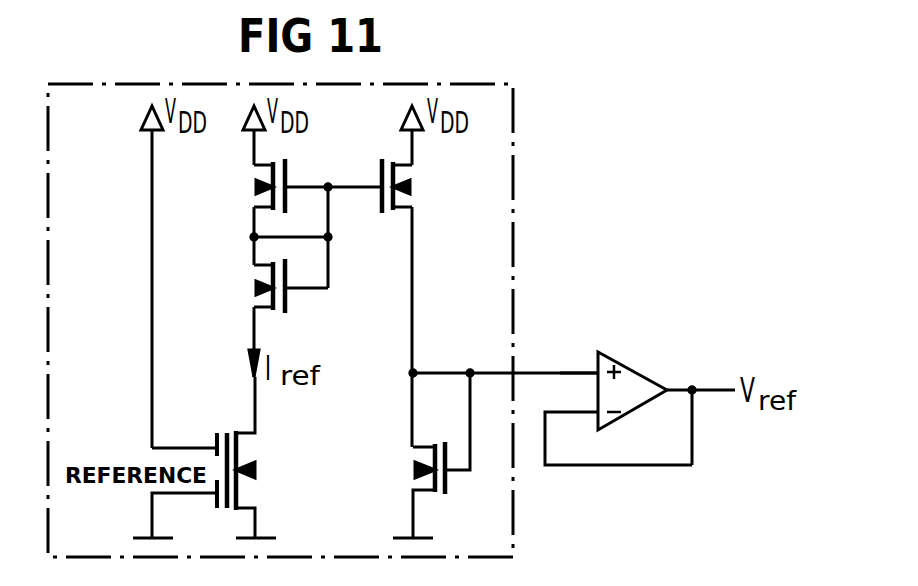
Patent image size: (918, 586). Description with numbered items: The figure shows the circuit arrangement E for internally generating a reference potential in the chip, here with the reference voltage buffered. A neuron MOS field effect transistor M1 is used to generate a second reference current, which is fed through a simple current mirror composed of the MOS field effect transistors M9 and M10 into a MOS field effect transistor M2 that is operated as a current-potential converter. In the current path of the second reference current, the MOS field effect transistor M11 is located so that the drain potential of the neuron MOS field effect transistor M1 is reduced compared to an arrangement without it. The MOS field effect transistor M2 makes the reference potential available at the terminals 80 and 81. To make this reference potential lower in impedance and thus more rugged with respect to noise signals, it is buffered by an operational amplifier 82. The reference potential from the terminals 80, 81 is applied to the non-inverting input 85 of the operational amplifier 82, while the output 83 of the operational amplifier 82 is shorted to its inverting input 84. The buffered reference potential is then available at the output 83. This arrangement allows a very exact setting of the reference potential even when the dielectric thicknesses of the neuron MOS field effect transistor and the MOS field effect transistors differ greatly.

The circuit arrangement E is at (512, 147).
The MOS field effect transistor M9 is at (250, 181).
The MOS field effect transistor M10 is at (414, 182).
The MOS field effect transistor M11 is at (262, 280).
The neuron MOS field effect transistor M1 is at (247, 490).
The MOS field effect transistor M2 is at (421, 482).
The terminal 80 is at (470, 371).
The terminal 81 is at (410, 373).
The operational amplifier 82 is at (630, 365).
The output 83 is at (701, 405).
The inverting input 84 is at (618, 438).
The non-inverting input 85 is at (578, 353).